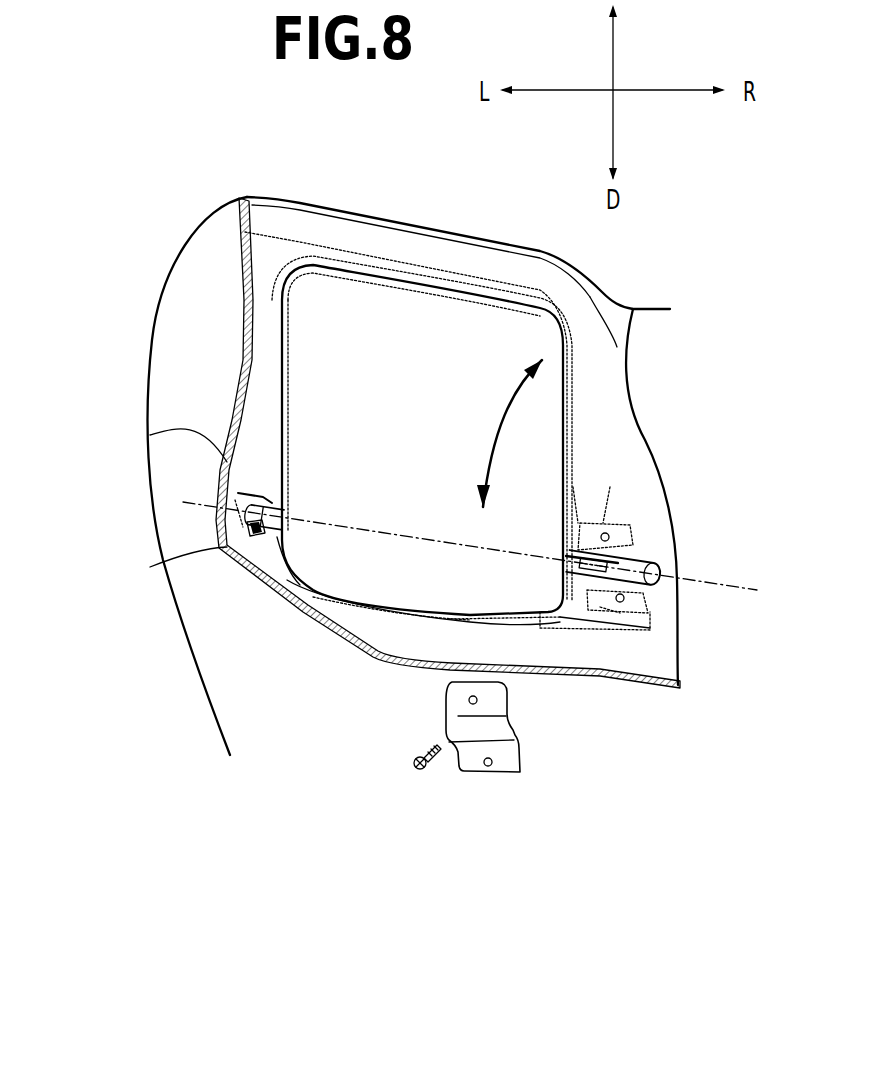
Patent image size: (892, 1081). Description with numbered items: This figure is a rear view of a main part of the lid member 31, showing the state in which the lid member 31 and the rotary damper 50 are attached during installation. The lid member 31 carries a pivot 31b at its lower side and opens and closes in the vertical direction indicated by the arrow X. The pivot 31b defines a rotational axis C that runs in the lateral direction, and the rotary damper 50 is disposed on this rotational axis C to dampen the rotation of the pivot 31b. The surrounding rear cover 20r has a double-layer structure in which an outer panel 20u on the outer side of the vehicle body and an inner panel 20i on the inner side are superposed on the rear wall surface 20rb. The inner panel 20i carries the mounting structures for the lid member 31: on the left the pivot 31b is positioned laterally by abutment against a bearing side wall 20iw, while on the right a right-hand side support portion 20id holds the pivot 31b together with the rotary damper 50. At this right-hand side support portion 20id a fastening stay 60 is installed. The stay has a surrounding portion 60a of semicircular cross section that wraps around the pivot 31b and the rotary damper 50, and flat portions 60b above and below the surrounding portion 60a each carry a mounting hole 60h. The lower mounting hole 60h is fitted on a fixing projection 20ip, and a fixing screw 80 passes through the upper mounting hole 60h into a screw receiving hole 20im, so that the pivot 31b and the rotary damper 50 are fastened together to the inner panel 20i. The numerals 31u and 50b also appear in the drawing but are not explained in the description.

The rear cover 20r is at (200, 262).
The rear wall surface 20rb is at (96, 278).
The outer panel 20u is at (198, 300).
The inner panel 20i is at (262, 340).
The bearing side wall 20iw is at (243, 527).
The screw receiving hole 20im is at (603, 520).
The right-hand side support portion 20id is at (620, 630).
The fixing projection 20ip is at (620, 613).
The lid member 31 is at (295, 440).
The hinge shaft upper portion 31u is at (280, 418).
The pivot 31b is at (256, 532).
The rotary damper 50 is at (650, 558).
The hinge bracket 50b is at (620, 530).
The fastening stay 60 is at (607, 533).
The surrounding portion 60a is at (520, 735).
The flat portions 60b is at (505, 693).
The mounting holes 60h is at (468, 700).
The fixing screw 80 is at (413, 763).
The arrow X is at (500, 417).
The rotational axis C is at (715, 587).